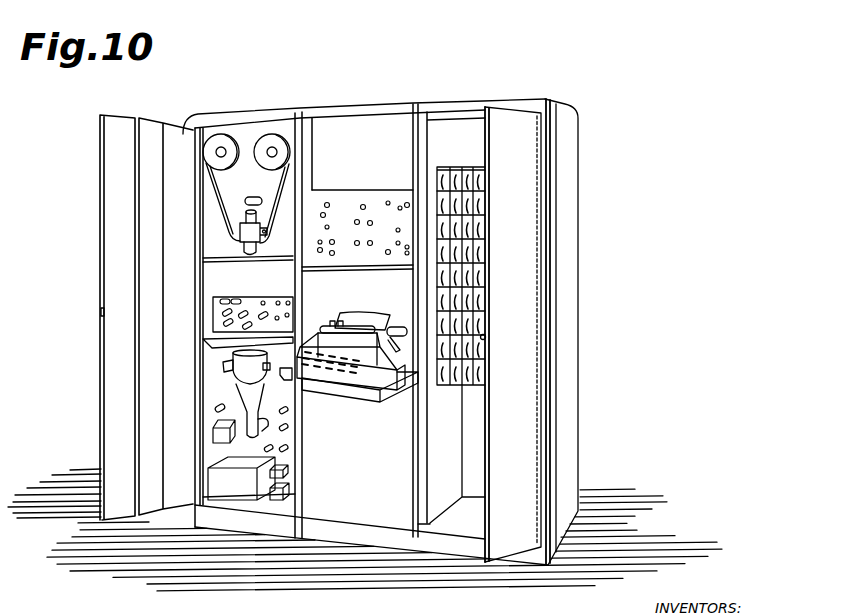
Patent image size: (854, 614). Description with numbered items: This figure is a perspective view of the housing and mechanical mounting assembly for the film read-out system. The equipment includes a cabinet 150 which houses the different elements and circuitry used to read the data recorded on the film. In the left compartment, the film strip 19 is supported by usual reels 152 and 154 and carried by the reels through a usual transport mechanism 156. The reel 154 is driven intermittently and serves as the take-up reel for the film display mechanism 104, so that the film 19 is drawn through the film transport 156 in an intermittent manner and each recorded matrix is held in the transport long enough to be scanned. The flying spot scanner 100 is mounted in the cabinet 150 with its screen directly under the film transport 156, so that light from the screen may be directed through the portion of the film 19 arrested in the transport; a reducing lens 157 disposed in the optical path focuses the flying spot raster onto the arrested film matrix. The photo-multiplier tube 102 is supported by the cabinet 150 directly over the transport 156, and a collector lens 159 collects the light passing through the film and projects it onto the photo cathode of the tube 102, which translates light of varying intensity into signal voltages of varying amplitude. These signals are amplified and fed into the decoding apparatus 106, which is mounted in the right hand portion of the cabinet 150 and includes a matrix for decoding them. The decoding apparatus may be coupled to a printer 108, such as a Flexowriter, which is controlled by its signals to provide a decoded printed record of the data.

The cabinet 150 is at (374, 104).
The reel 152 is at (221, 134).
The take-up reel 154 is at (273, 134).
The film strip 19 is at (226, 225).
The film display mechanism 104 is at (255, 187).
The photo-multiplier tube 102 is at (262, 200).
The collector lens 159 is at (258, 217).
The film transport 156 is at (248, 234).
The reducing lens 157 is at (258, 246).
The decoding apparatus 106 is at (455, 165).
The flying spot scanner 100 is at (231, 377).
The printer 108 is at (387, 373).